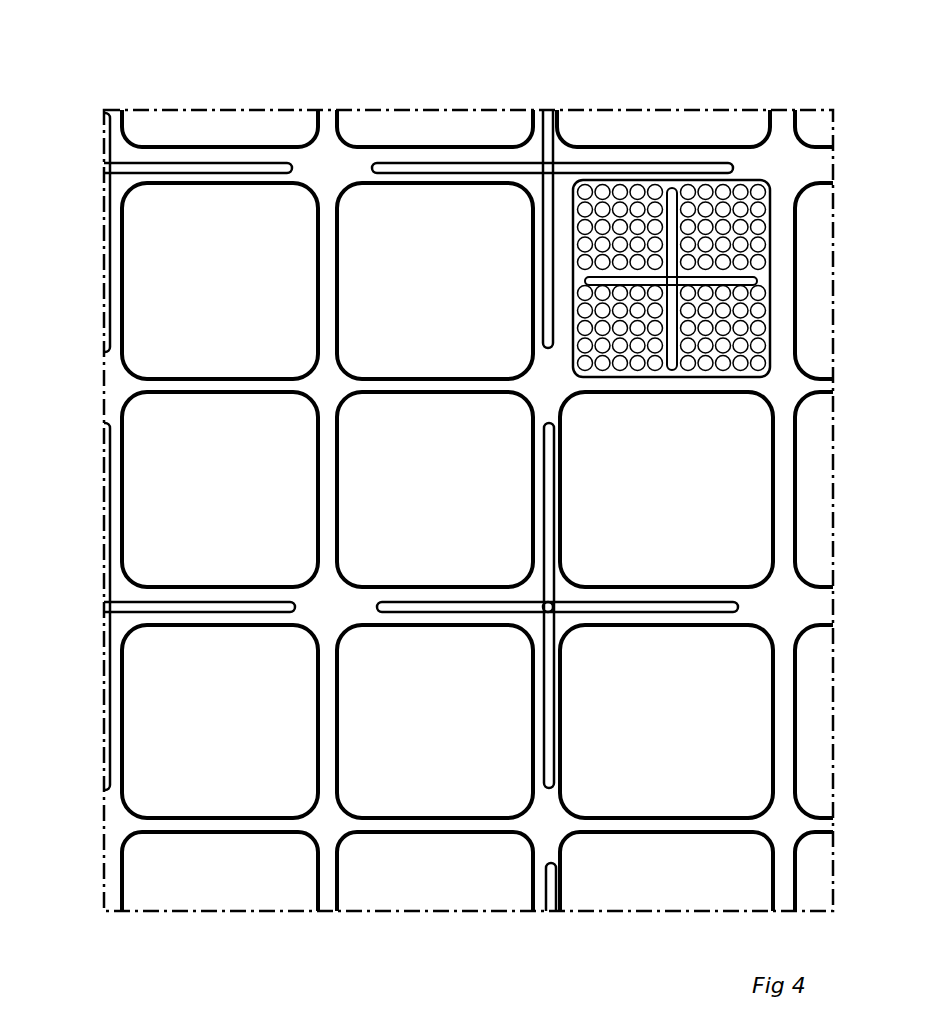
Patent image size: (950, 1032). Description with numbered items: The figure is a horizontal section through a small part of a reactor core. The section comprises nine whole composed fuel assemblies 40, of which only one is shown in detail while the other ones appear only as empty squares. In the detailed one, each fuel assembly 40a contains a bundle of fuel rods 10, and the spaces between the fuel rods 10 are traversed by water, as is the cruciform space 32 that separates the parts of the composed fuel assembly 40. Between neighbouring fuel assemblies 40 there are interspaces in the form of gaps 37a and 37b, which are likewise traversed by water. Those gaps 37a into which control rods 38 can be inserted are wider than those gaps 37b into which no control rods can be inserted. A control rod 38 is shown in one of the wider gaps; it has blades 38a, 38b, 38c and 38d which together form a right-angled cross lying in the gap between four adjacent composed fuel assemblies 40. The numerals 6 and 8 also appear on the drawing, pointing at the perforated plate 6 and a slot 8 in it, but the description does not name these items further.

The perforated plate 6 is at (770, 223).
The slot in plate 8 is at (755, 283).
The fuel rods 10 is at (758, 190).
The cruciform space 32 is at (677, 262).
The gaps 37a is at (558, 190).
The gaps 37b is at (733, 385).
The control rods 38 is at (421, 667).
The blade 38a is at (554, 487).
The blade 38b is at (645, 602).
The blade 38c is at (555, 716).
The blade 38d is at (462, 612).
The composed fuel assemblies 40 is at (362, 210).
The fuel assembly 40a is at (757, 354).